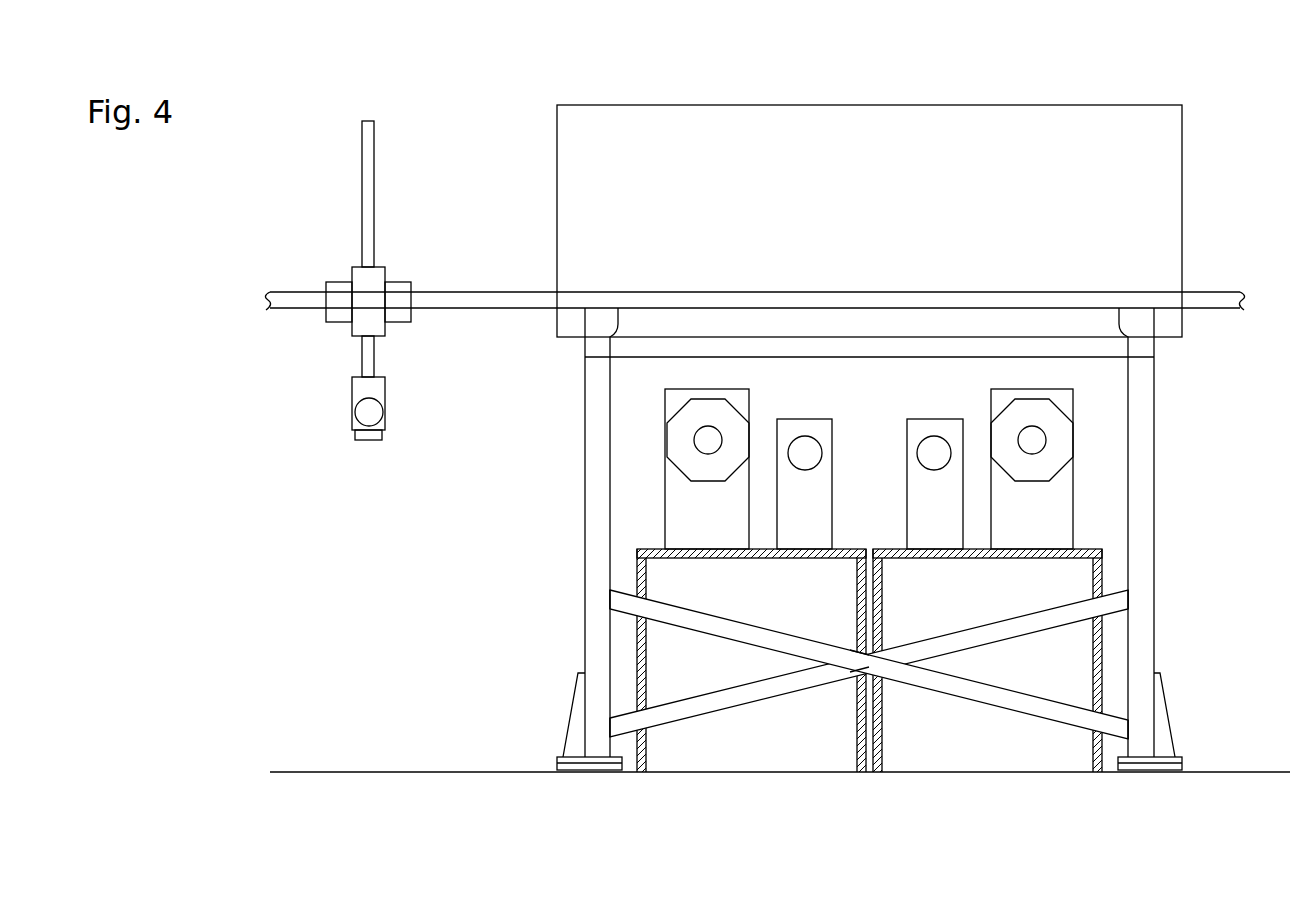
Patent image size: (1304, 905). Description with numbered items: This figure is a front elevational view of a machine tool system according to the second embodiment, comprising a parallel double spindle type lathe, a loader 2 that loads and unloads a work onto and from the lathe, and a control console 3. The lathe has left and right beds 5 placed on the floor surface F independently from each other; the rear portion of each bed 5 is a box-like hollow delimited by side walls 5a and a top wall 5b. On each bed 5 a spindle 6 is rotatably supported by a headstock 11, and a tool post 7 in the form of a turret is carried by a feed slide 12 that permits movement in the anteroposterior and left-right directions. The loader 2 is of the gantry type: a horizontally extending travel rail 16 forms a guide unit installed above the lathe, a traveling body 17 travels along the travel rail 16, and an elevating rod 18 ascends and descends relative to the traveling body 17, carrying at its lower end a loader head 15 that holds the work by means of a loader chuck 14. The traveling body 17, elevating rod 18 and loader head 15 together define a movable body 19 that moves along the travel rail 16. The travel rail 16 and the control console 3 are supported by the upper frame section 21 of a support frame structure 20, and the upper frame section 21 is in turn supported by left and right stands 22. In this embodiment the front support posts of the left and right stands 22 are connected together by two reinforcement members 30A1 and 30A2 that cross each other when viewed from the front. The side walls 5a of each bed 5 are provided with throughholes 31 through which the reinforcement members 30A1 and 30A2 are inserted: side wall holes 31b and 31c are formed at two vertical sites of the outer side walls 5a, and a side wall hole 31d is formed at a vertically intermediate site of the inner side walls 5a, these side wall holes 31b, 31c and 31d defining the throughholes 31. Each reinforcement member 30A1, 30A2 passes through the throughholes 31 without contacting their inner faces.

The loader 2 is at (343, 188).
The control console 3 is at (945, 105).
The bed 5 is at (869, 692).
The side wall 5a is at (1092, 660).
The top wall 5b is at (1023, 558).
The spindle 6 is at (928, 437).
The tool post 7 is at (685, 407).
The headstock 11 is at (907, 515).
The feed slide 12 is at (665, 497).
The loader chuck 14 is at (383, 406).
The loader head 15 is at (352, 395).
The travel rail 16 is at (292, 292).
The traveling body 17 is at (395, 282).
The elevating rod 18 is at (375, 195).
The movable body 19 is at (370, 280).
The support frame structure 20 is at (563, 603).
The upper frame section 21 is at (1088, 357).
The stand 22 is at (585, 540).
The reinforcement member 30A1 is at (1007, 710).
The reinforcement member 30A2 is at (733, 712).
The throughhole 31 is at (872, 689).
The side wall hole 31b is at (608, 600).
The side wall hole 31c is at (650, 733).
The side wall hole 31d is at (850, 657).
The floor surface F is at (388, 772).